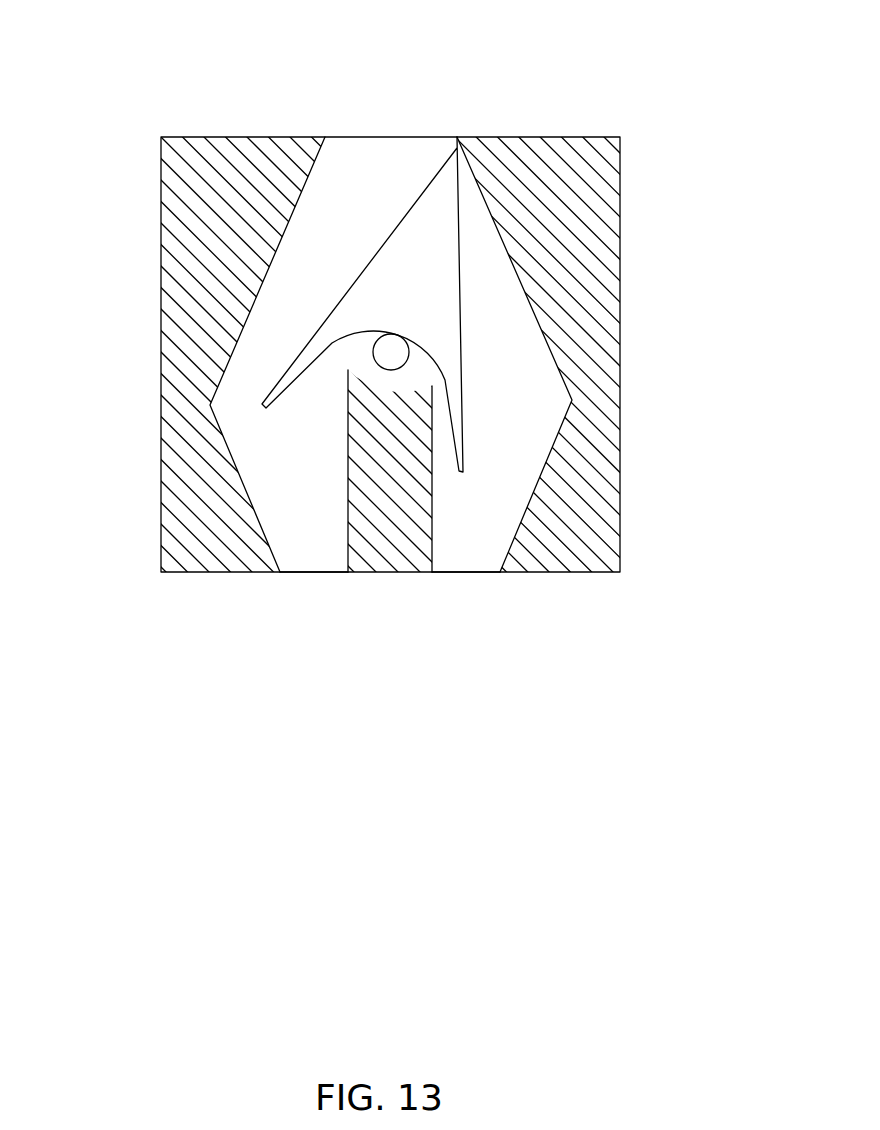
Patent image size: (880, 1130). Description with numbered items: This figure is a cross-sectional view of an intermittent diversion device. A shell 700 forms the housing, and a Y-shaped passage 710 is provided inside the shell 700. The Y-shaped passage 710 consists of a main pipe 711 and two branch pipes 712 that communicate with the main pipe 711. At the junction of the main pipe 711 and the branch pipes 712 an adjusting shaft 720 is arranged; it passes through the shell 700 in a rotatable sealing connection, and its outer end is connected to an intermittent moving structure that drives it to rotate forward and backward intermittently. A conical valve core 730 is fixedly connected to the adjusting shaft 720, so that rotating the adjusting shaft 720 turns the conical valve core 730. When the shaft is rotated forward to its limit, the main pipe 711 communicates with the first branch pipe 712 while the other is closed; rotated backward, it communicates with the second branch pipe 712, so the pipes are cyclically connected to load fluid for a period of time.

The shell 700 is at (555, 185).
The Y-shaped passage 710 is at (53, 342).
The main pipe 711 is at (334, 244).
The branch pipe 712 is at (487, 492).
The adjusting shaft 720 is at (398, 350).
The conical valve core 730 is at (428, 233).